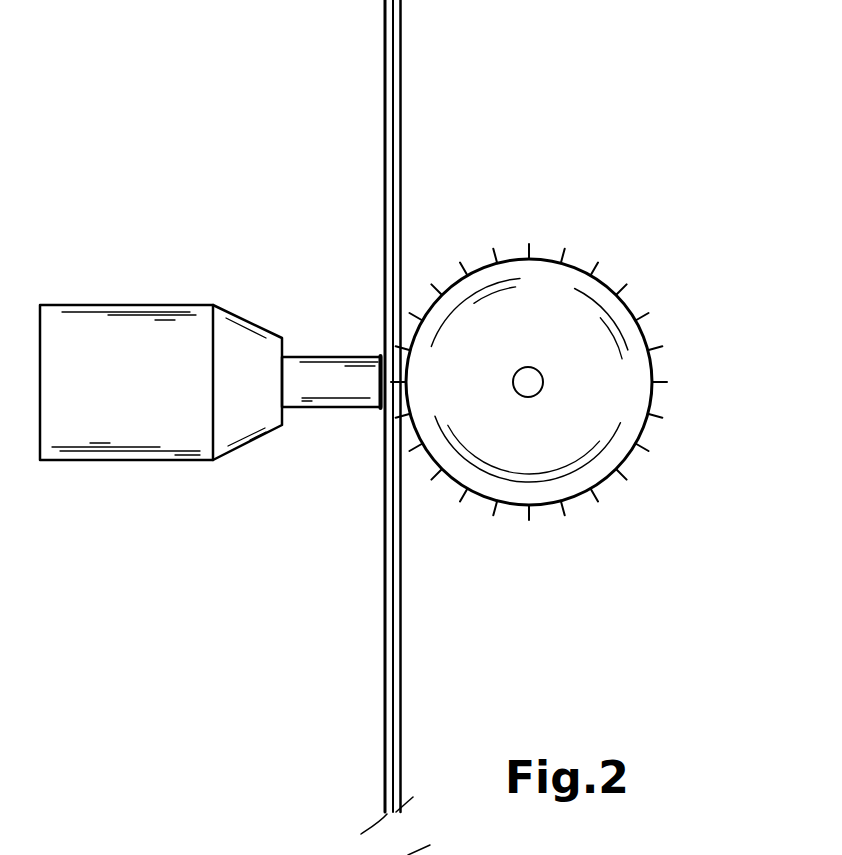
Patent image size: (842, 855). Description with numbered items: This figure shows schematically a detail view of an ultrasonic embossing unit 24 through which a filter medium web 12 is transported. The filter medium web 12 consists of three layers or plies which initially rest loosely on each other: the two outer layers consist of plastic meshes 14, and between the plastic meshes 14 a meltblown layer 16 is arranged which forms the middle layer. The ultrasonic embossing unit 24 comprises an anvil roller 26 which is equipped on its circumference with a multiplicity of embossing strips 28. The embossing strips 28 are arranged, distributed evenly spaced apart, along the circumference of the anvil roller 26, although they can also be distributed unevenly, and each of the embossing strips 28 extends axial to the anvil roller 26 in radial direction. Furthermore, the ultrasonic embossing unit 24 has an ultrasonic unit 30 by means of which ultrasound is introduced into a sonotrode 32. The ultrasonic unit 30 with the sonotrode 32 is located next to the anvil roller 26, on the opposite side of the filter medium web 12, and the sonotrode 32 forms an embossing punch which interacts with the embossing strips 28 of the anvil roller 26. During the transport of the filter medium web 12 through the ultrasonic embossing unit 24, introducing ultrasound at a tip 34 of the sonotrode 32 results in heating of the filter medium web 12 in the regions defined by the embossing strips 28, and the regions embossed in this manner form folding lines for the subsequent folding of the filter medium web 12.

The filter medium web 12 is at (375, 617).
The plastic meshes 14 is at (384, 748).
The meltblown layer 16 is at (395, 812).
The ultrasonic embossing unit 24 is at (325, 272).
The anvil roller 26 is at (620, 372).
The embossing strips 28 is at (413, 313).
The ultrasonic unit 30 is at (138, 320).
The sonotrode 32 is at (328, 397).
The tip 34 is at (380, 383).